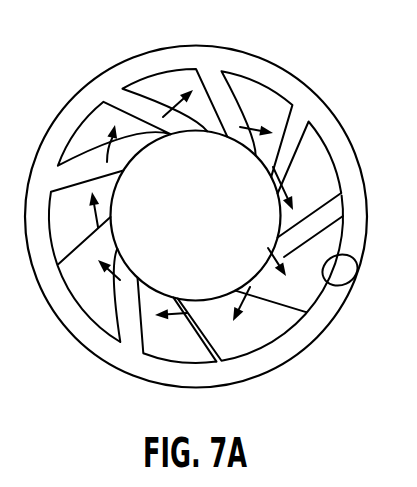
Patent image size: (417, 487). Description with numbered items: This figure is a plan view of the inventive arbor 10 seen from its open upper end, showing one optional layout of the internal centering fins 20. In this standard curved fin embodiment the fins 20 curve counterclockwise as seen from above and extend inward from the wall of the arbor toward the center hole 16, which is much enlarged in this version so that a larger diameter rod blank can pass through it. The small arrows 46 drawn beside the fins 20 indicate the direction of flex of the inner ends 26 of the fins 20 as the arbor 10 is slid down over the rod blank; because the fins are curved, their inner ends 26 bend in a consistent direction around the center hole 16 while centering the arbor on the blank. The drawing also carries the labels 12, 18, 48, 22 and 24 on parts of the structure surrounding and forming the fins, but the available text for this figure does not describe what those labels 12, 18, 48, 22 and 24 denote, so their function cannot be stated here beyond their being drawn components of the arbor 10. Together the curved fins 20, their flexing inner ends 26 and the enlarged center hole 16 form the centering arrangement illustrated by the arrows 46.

The arbor 10 is at (129, 30).
The outer ring 12 is at (318, 120).
The center hole 16 is at (210, 232).
The blade 18 is at (260, 98).
The blade 48 is at (175, 103).
The internal centering fins 20 is at (340, 212).
The blade trailing edge 22 is at (344, 212).
The blade root 24 is at (358, 270).
The inner ends 26 is at (238, 287).
The arrows 46 is at (168, 114).